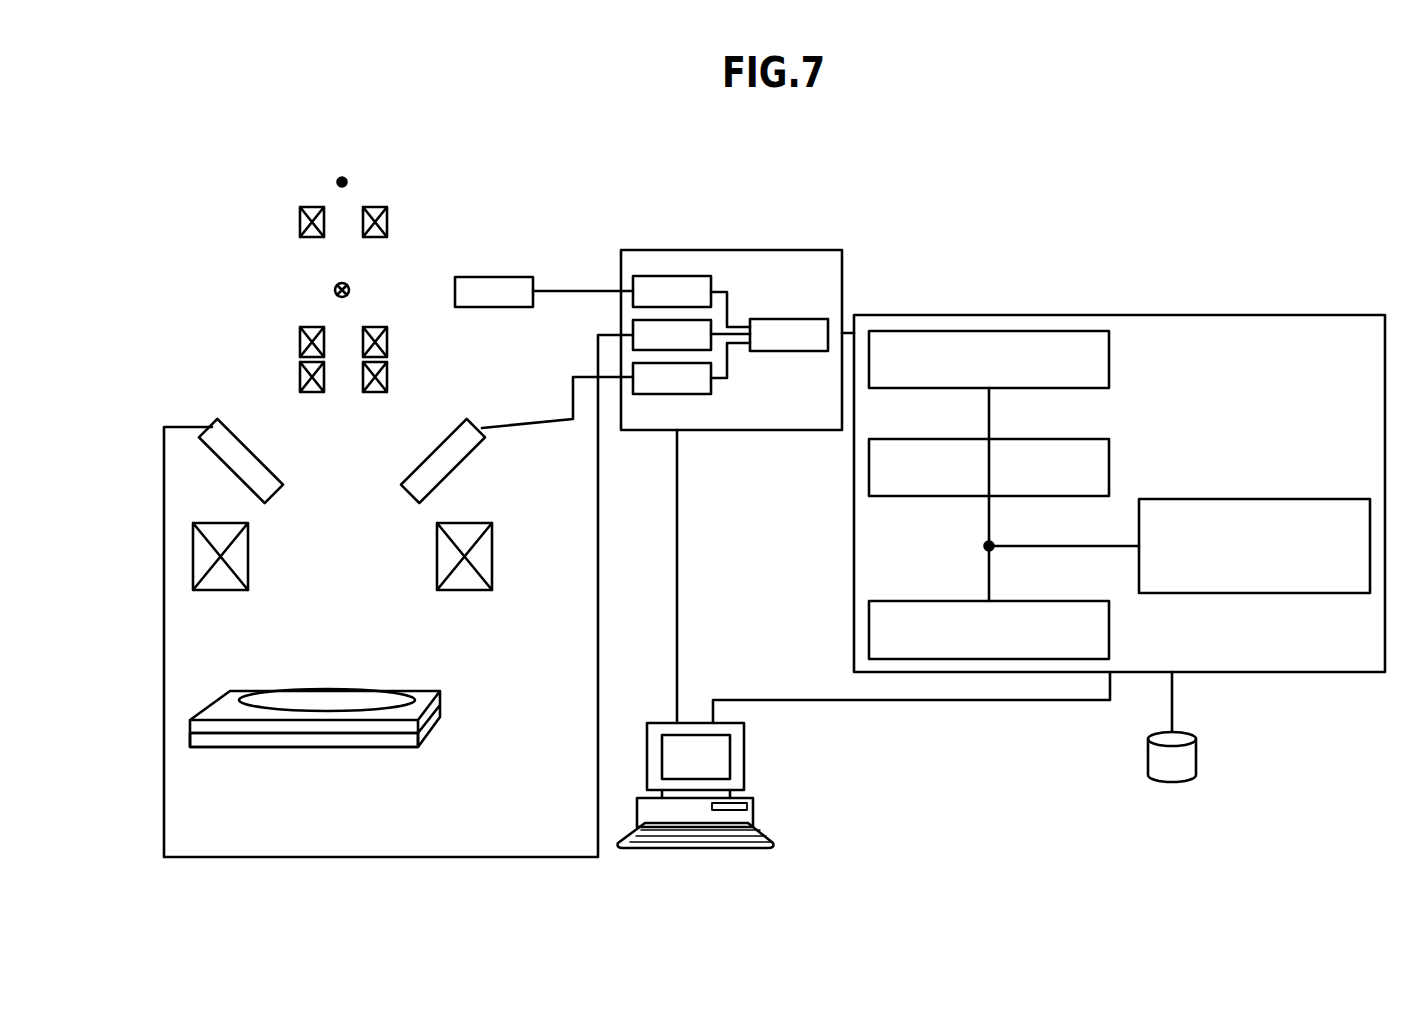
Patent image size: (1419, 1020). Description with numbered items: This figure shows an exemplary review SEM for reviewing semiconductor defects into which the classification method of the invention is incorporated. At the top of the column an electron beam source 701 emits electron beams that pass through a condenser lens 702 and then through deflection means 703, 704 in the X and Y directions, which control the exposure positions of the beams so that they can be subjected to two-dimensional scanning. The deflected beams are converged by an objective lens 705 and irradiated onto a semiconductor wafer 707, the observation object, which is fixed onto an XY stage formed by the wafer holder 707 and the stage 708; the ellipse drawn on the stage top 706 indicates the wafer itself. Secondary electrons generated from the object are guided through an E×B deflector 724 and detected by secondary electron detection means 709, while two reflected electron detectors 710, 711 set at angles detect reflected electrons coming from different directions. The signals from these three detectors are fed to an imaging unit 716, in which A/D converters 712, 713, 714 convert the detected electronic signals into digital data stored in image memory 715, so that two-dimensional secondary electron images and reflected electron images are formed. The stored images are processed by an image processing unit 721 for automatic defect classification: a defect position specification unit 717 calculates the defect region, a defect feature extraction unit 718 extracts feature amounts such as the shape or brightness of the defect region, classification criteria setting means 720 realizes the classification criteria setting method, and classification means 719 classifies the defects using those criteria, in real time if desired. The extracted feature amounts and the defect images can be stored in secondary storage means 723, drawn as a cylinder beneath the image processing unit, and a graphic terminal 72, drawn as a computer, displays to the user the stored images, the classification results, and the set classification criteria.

The electron beam source 701 is at (347, 178).
The condenser lens 702 is at (387, 222).
The deflection means in X direction 703 is at (387, 340).
The deflection means in Y direction 704 is at (387, 376).
The E×B deflector 724 is at (349, 286).
The objective lens 705 is at (478, 522).
The wafer 706 is at (353, 690).
The semiconductor wafer 707 is at (441, 694).
The XY stage 708 is at (441, 718).
The secondary electron detection means 709 is at (486, 276).
The reflected electron detector 710 is at (207, 418).
The reflected electron detector 711 is at (478, 418).
The A/D converter 712 is at (691, 301).
The A/D converter 713 is at (691, 335).
The A/D converter 714 is at (691, 368).
The image memory 715 is at (789, 335).
The imaging unit 716 is at (731, 314).
The defect position specification unit 717 is at (1110, 347).
The defect feature extraction unit 718 is at (1110, 450).
The classification means 719 is at (1110, 620).
The classification criteria setting means 720 is at (1277, 498).
The image processing unit 721 is at (1119, 468).
The computer 72 is at (745, 765).
The secondary storage means 723 is at (1197, 757).